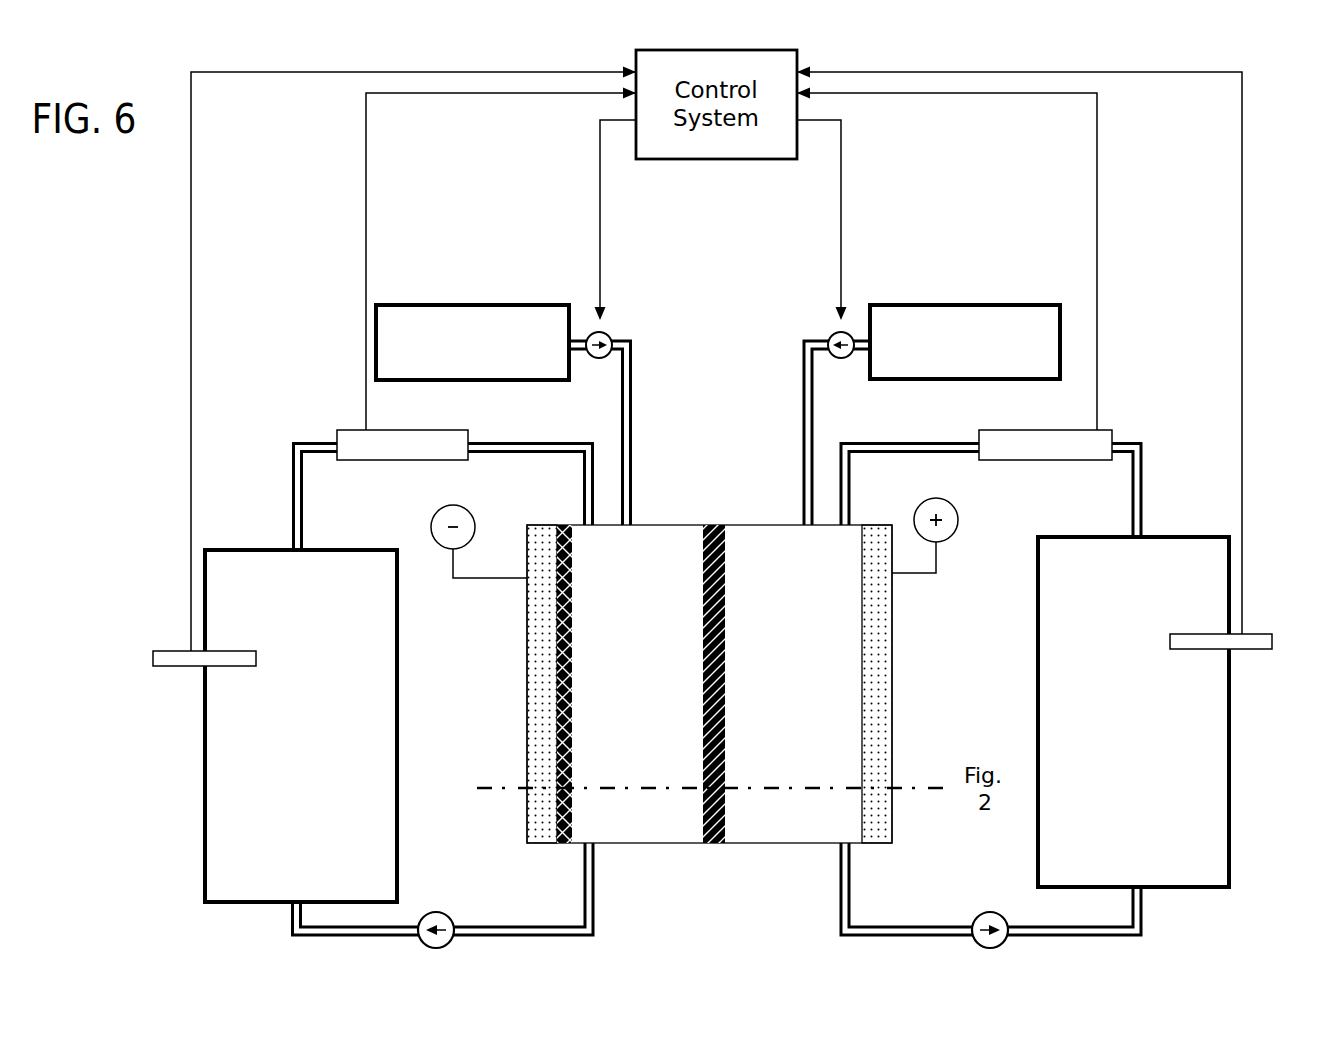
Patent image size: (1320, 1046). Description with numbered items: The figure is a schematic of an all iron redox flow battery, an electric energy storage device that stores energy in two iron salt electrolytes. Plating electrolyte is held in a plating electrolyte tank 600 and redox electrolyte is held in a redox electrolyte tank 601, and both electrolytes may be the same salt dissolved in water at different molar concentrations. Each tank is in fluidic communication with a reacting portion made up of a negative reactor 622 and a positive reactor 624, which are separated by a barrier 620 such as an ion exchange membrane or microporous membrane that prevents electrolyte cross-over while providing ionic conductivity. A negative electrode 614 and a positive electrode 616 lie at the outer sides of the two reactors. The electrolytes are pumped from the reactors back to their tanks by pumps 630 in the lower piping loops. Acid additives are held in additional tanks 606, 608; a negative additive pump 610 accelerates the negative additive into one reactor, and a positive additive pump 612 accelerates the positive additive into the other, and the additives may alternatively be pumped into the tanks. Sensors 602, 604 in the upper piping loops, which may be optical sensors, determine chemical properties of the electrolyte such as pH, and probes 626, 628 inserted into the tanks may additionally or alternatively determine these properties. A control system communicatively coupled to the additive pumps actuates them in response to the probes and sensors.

The plating electrolyte tank 600 is at (279, 697).
The redox electrolyte tank 601 is at (1119, 697).
The sensor 602 is at (381, 457).
The sensor 604 is at (1024, 457).
The additional tank 606 is at (451, 357).
The additional tank 608 is at (944, 357).
The negative additive pump 610 is at (595, 358).
The positive additive pump 612 is at (838, 358).
The negative electrode 614 is at (527, 668).
The positive electrode 616 is at (892, 668).
The barrier 620 is at (712, 845).
The negative reactor 622 is at (615, 652).
The positive reactor 624 is at (784, 652).
The probe 626 is at (1262, 633).
The probe 628 is at (170, 651).
The pumps 630 is at (440, 912).